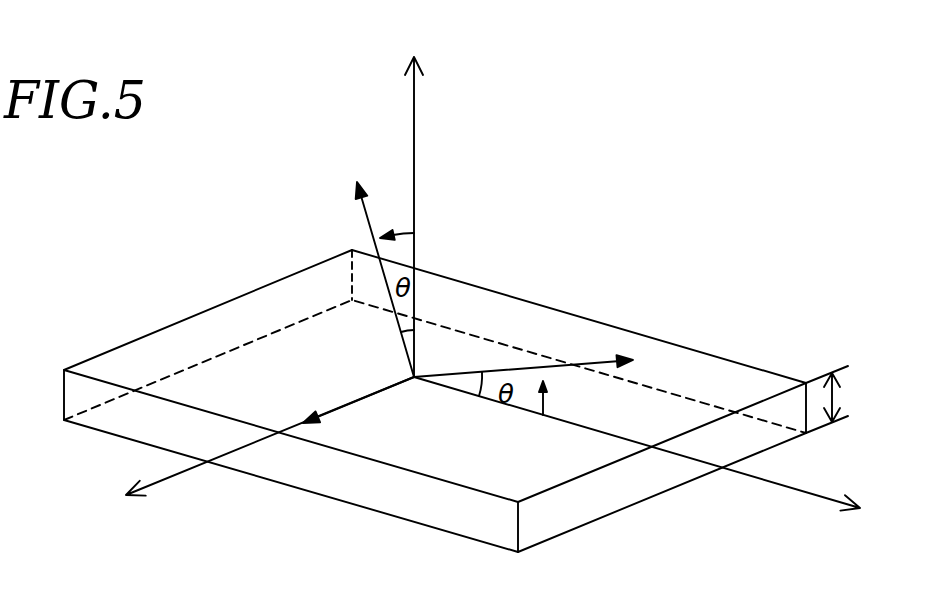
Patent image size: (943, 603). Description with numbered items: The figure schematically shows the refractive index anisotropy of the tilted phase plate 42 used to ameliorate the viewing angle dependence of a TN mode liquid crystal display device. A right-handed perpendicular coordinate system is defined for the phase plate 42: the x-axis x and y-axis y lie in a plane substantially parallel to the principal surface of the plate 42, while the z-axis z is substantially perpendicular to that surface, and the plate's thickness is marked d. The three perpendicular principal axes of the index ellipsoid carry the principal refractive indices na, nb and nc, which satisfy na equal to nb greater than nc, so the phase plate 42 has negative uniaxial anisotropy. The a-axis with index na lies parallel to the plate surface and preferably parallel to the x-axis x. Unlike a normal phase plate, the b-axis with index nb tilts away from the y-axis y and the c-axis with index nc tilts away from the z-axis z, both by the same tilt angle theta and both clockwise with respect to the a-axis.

The tilted phase plate 42 is at (514, 308).
The z-axis z is at (414, 199).
The x-axis x is at (250, 452).
The y-axis y is at (657, 463).
The principal refractive index on the c-axis nc is at (383, 254).
The principal refractive index on the a-axis na is at (346, 401).
The principal refractive index on the b-axis nb is at (551, 369).
The plate thickness d is at (836, 399).